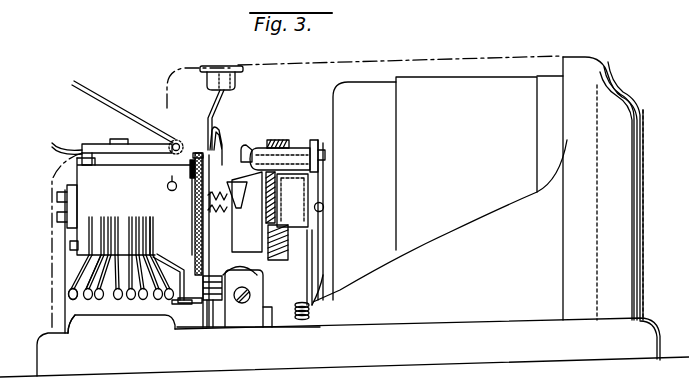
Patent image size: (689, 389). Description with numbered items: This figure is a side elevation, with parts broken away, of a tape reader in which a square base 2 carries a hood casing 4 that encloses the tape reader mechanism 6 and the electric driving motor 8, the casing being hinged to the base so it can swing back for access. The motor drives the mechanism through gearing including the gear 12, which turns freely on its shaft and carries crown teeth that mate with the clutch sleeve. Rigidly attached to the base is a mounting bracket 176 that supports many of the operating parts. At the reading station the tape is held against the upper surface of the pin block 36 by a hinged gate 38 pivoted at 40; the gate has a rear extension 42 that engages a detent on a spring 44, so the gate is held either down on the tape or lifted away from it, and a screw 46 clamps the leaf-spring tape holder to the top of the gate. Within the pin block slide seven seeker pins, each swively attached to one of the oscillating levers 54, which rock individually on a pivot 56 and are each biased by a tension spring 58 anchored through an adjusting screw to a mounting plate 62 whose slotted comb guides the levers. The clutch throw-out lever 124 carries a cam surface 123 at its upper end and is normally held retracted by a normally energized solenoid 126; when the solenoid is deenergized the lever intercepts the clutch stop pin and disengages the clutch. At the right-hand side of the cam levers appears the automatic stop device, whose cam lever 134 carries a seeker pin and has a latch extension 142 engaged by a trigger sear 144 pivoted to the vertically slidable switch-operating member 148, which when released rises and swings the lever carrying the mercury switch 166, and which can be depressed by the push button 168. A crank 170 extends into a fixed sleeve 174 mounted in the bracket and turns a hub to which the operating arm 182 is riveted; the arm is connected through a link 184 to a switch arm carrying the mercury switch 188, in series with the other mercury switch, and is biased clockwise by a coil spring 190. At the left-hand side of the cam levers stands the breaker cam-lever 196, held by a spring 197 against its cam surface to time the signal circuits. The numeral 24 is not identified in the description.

The base 2 is at (642, 335).
The hood casing 4 is at (623, 153).
The tape reader mechanism 6 is at (136, 100).
The electric driving motor 8 is at (493, 85).
The gear 12 is at (275, 148).
The pivot pin 24 is at (170, 180).
The pin block 36 is at (90, 175).
The hinged gate 38 is at (67, 130).
The pivot 40 is at (177, 143).
The rear extension 42 is at (211, 137).
The spring 44 is at (218, 147).
The screw 46 is at (115, 142).
The oscillating levers 54 is at (147, 215).
The pivot 56 is at (68, 245).
The tension spring 58 is at (113, 303).
The mounting plate 62 is at (68, 308).
The cam surface 123 is at (246, 178).
The throw-out lever 124 is at (257, 249).
The solenoid 126 is at (286, 256).
The cam lever 134 is at (152, 237).
The latch extension 142 is at (178, 268).
The trigger sear 144 is at (188, 305).
The switch-operating member 148 is at (225, 92).
The mercury switch 166 is at (226, 312).
The push button 168 is at (222, 66).
The crank 170 is at (245, 155).
The fixed sleeve 174 is at (298, 158).
The mounting bracket 176 is at (206, 330).
The operating arm 182 is at (322, 172).
The link 184 is at (343, 262).
The mercury switch 188 is at (310, 314).
The coil spring 190 is at (324, 203).
The breaker cam-lever 196 is at (82, 273).
The spring 197 is at (70, 292).